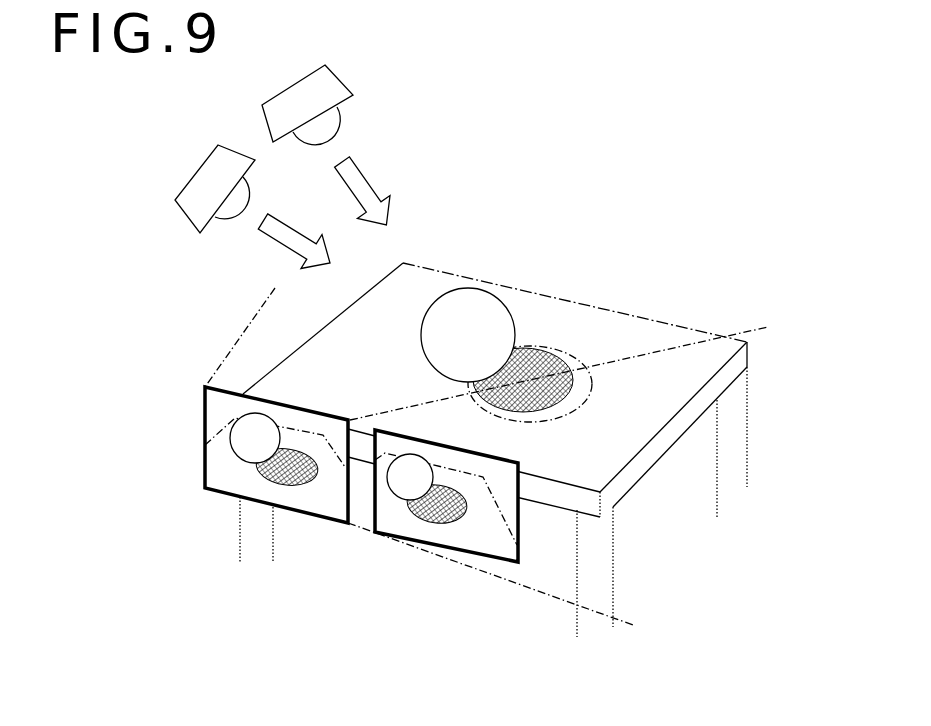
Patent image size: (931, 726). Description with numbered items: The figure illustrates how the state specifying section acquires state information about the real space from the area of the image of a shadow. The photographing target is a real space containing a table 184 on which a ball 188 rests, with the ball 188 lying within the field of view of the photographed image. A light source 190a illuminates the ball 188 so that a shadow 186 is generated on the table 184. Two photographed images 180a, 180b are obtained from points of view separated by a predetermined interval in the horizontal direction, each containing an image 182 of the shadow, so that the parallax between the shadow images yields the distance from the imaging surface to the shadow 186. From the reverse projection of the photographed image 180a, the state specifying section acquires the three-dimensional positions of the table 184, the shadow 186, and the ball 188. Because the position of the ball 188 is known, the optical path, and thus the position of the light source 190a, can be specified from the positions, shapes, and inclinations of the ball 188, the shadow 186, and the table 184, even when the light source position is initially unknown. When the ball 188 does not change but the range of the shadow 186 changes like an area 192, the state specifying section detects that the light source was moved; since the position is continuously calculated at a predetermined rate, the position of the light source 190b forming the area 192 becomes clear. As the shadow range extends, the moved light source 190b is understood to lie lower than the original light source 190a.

The photographed image 180a is at (235, 471).
The photographed image 180b is at (520, 528).
The image of the shadow 182 is at (292, 488).
The table 184 is at (652, 320).
The shadow 186 is at (545, 357).
The ball 188 is at (487, 290).
The light source 190a is at (347, 83).
The light source 190b is at (186, 186).
The area 192 is at (585, 407).